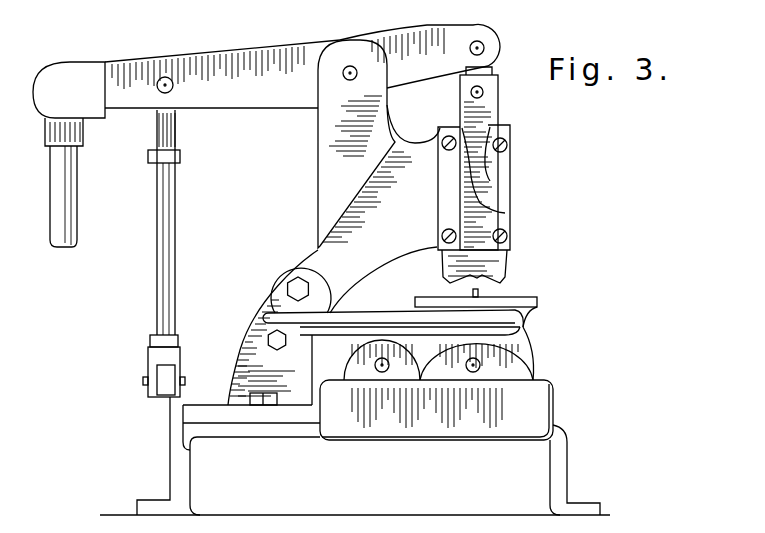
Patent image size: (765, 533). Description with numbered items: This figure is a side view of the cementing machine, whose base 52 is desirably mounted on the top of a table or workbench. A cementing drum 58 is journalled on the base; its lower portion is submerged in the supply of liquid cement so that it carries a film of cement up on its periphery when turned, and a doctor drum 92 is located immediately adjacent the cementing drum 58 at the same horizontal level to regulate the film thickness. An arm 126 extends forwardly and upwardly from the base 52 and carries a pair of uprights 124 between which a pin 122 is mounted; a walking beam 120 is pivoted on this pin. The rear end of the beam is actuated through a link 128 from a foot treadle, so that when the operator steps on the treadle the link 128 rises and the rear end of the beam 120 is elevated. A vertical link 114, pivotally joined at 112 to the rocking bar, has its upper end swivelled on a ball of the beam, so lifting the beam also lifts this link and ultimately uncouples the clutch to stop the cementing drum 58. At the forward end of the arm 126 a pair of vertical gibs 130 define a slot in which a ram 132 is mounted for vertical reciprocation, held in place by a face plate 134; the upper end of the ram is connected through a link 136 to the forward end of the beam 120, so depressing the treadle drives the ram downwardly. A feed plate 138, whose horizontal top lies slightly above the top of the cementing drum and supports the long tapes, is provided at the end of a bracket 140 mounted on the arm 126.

The base 52 is at (560, 465).
The cementing drum 58 is at (527, 357).
The doctor drum 92 is at (362, 373).
The pivotal joint 112 is at (146, 386).
The vertical link 114 is at (172, 288).
The walking beam 120 is at (302, 50).
The pin 122 is at (357, 79).
The uprights 124 is at (318, 146).
The arm 126 is at (300, 249).
The link 128 is at (73, 216).
The vertical gibs 130 is at (463, 165).
The ram 132 is at (495, 115).
The face plate 134 is at (507, 222).
The link 136 is at (490, 72).
The feed plate 138 is at (538, 302).
The bracket 140 is at (388, 316).